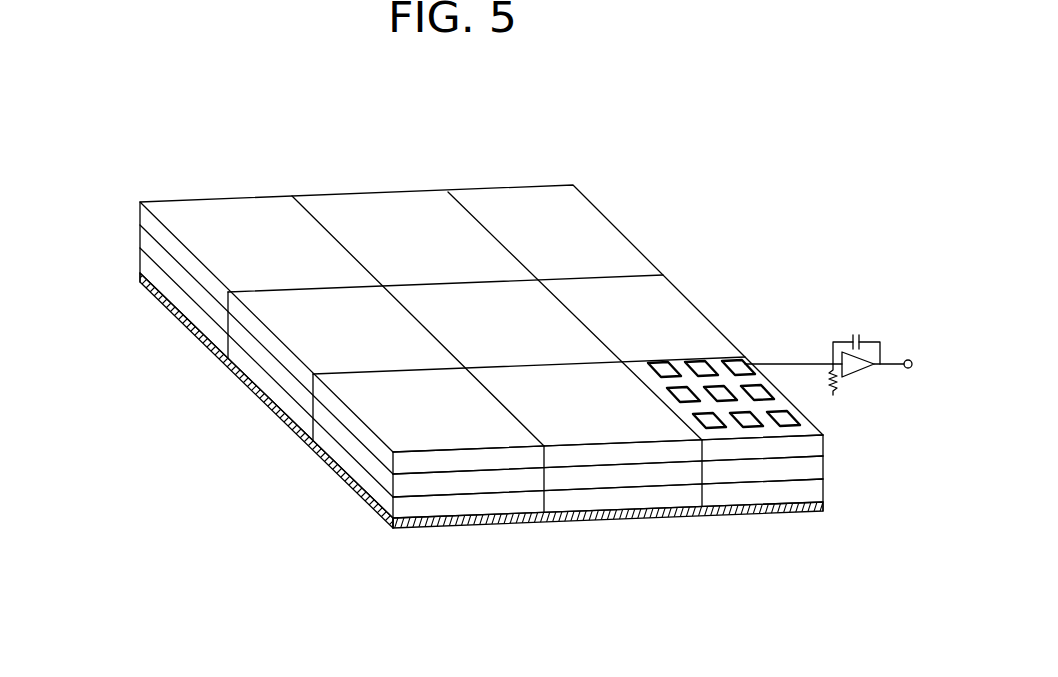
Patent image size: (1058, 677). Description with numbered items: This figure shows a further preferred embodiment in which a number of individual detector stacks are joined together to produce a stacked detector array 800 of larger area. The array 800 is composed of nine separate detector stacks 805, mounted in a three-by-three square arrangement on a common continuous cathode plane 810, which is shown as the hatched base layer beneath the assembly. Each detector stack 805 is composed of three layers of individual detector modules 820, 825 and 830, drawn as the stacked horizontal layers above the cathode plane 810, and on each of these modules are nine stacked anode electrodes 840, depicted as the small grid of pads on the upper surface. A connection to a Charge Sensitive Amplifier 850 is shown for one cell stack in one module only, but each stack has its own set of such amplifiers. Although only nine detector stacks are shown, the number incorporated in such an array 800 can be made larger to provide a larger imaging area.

The array 800 is at (571, 166).
The detector stack 805 is at (143, 236).
The common continuous cathode plane 810 is at (485, 528).
The detector module 820 is at (826, 492).
The detector module 825 is at (826, 470).
The detector module 830 is at (826, 446).
The stacked anode electrode 840 is at (748, 358).
The Charge Sensitive Amplifier 850 is at (850, 369).